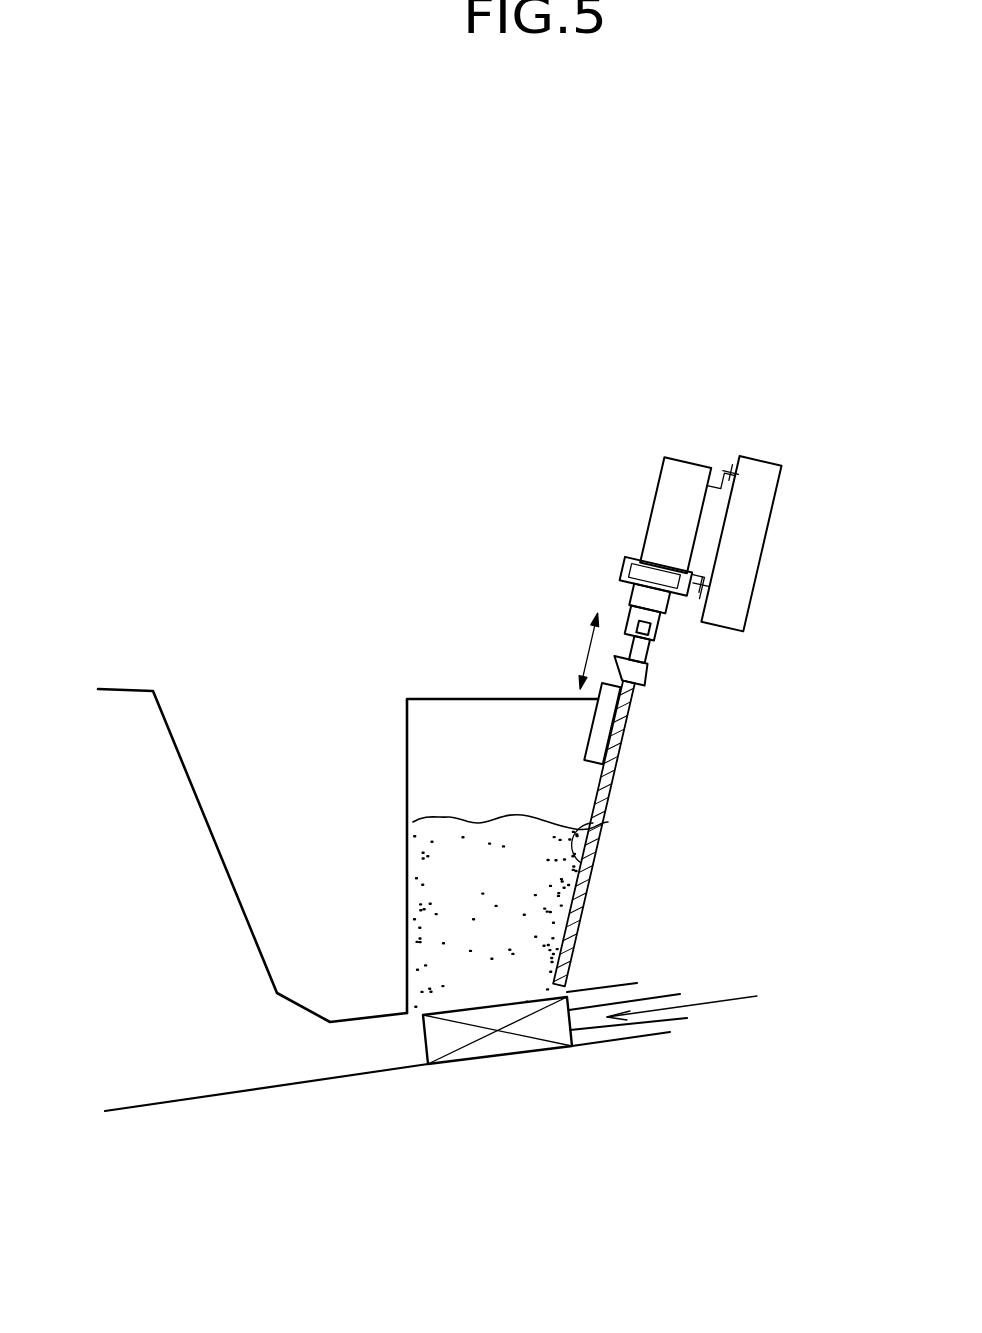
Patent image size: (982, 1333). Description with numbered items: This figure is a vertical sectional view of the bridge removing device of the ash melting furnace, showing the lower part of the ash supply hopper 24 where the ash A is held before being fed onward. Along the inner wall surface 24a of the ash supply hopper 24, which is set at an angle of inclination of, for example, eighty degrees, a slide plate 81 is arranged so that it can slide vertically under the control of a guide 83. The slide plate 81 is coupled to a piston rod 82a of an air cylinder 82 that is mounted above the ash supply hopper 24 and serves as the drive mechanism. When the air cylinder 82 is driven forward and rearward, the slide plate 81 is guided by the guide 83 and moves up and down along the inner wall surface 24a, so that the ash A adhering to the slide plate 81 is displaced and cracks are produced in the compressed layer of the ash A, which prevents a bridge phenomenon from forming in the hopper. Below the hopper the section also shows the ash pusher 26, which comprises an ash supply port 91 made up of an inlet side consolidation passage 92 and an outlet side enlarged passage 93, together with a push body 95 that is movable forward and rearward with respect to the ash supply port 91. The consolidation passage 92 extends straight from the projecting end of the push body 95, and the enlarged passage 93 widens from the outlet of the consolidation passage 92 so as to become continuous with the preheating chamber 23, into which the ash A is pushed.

The preheating chamber 23 is at (148, 910).
The ash supply hopper 24 is at (433, 694).
The inner wall surface 24a is at (608, 822).
The ash pusher 26 is at (609, 1044).
The slide plate 81 is at (591, 806).
The air cylinder 82 is at (670, 495).
The piston rod 82a is at (648, 648).
The guide 83 is at (587, 737).
The ash supply port 91 is at (405, 1208).
The inlet side consolidation passage 92 is at (380, 1042).
The outlet side enlarged passage 93 is at (285, 1060).
The push body 95 is at (515, 1045).
The ash A is at (457, 855).